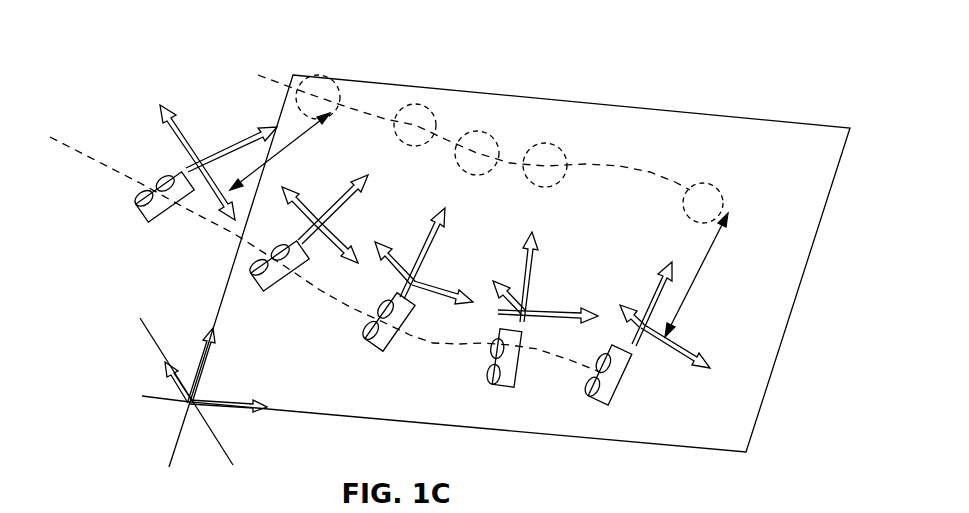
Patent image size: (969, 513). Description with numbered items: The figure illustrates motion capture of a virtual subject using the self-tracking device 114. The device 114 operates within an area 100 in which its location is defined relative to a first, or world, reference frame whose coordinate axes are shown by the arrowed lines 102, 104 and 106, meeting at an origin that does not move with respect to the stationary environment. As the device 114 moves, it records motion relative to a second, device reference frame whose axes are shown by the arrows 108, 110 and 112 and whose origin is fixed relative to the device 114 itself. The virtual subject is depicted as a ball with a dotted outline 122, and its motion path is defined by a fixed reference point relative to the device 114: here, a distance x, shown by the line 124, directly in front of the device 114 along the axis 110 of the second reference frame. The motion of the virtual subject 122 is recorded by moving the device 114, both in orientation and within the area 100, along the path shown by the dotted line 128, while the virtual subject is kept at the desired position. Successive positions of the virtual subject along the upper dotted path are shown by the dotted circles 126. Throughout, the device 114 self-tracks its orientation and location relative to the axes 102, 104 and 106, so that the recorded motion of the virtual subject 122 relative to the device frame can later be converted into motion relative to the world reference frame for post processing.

The area 100 is at (512, 38).
The first reference frame axis 102 is at (180, 393).
The first reference frame axis 104 is at (240, 412).
The first reference frame axis 106 is at (208, 370).
The second reference frame axis 108 is at (185, 125).
The second reference frame axis 110 is at (210, 158).
The second reference frame axis 112 is at (215, 215).
The self-tracking device 114 is at (148, 230).
The virtual subject 122 is at (724, 186).
The line indicating distance x 124 is at (327, 115).
The waypoints 126 is at (433, 118).
The dotted line showing device path 128 is at (82, 152).